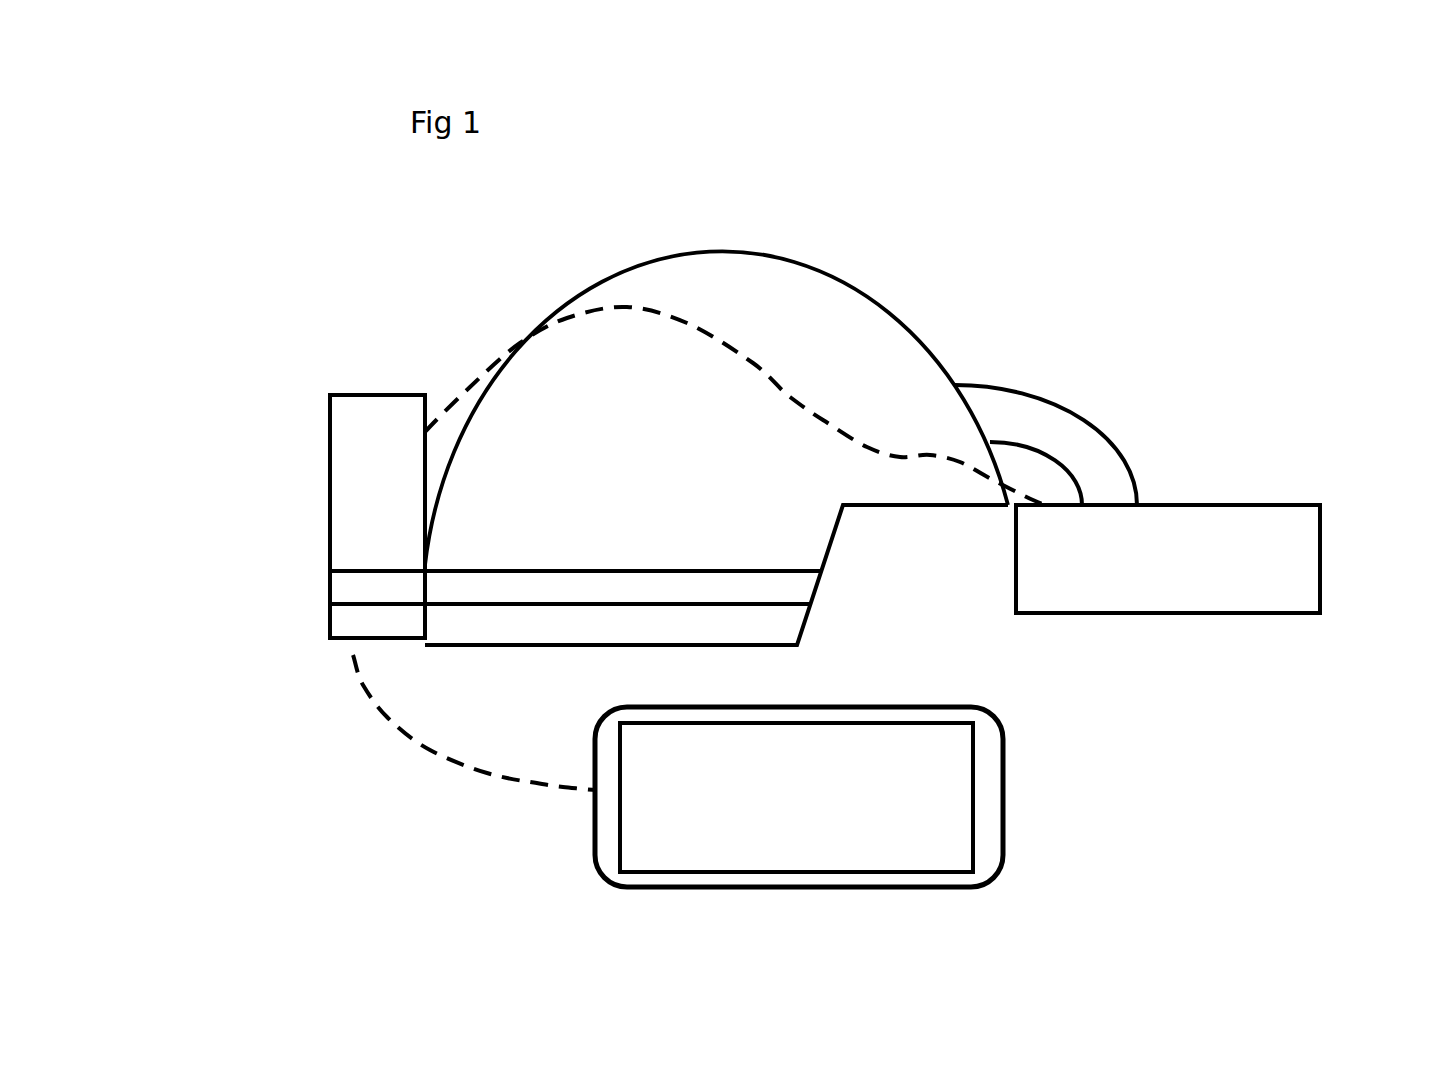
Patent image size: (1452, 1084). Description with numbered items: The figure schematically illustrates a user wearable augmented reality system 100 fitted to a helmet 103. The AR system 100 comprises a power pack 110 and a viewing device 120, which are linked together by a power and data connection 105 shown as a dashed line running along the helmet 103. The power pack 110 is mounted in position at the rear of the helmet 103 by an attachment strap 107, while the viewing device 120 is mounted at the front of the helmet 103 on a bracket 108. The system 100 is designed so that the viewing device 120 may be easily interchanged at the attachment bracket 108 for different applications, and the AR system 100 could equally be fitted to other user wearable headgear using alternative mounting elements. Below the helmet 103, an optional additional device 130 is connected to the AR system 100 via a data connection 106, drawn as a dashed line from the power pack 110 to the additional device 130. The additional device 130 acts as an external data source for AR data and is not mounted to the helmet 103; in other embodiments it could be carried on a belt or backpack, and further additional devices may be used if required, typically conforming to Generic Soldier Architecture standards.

The augmented reality (AR) system 100 is at (1082, 246).
The helmet 103 is at (715, 295).
The power and data connection 105 is at (563, 320).
The data connection 106 is at (393, 725).
The attachment strap 107 is at (353, 588).
The bracket 108 is at (1073, 450).
The power pack 110 is at (353, 457).
The viewing device 120 is at (1237, 575).
The additional device 130 is at (847, 804).